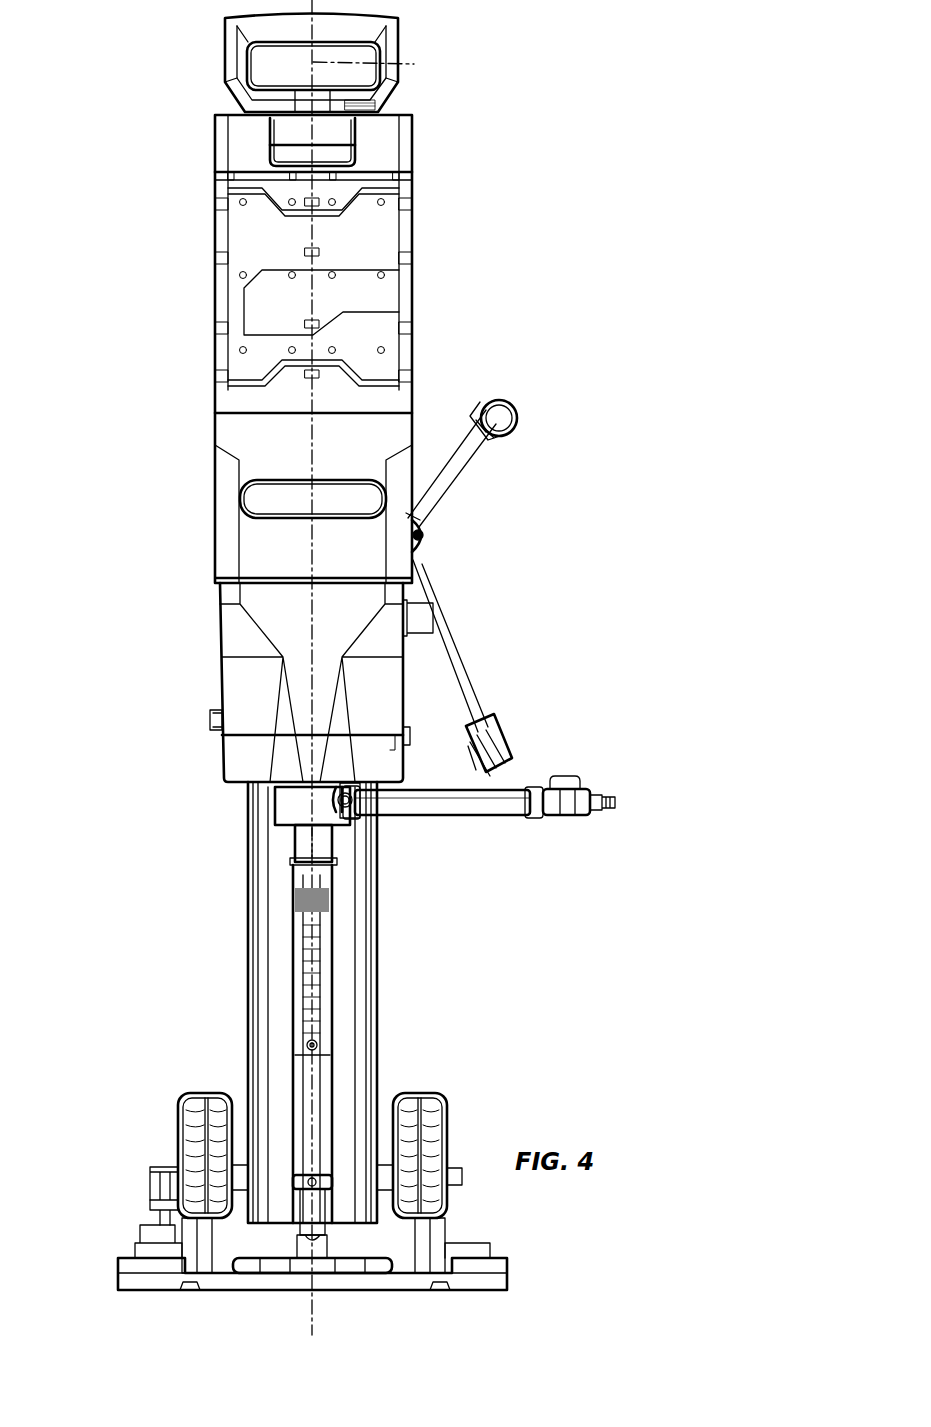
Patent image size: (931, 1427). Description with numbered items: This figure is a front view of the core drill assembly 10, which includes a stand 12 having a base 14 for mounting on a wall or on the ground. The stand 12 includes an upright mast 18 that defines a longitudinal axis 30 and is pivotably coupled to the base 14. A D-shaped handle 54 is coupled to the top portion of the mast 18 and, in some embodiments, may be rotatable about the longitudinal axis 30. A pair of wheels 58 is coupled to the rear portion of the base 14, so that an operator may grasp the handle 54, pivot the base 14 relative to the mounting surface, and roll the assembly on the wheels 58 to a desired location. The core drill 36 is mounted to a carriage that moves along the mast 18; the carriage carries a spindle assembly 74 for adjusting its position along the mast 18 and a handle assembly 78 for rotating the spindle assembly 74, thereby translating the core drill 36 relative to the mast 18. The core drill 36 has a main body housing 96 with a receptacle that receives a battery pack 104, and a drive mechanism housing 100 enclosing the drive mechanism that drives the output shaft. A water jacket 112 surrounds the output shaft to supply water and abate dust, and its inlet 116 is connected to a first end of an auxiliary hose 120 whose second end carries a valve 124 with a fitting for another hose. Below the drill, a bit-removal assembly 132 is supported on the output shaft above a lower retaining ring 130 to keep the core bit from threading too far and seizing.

The core drill assembly 10 is at (107, 225).
The handle 54 is at (240, 62).
The longitudinal axis 30 is at (383, 66).
The battery pack 104 is at (268, 178).
The core drill 36 is at (222, 475).
The main body housing 96 is at (222, 550).
The drive mechanism housing 100 is at (238, 637).
The bit-removal assembly 132 is at (207, 718).
The handle assembly 78 is at (497, 410).
The spindle assembly 74 is at (420, 549).
The inlet 116 is at (298, 800).
The lower retaining ring 130 is at (290, 835).
The water jacket 112 is at (338, 820).
The auxiliary hose 120 is at (470, 805).
The valve 124 is at (580, 815).
The mast 18 is at (262, 940).
The stand 12 is at (406, 934).
The wheels 58 is at (195, 1092).
The base 14 is at (150, 1218).